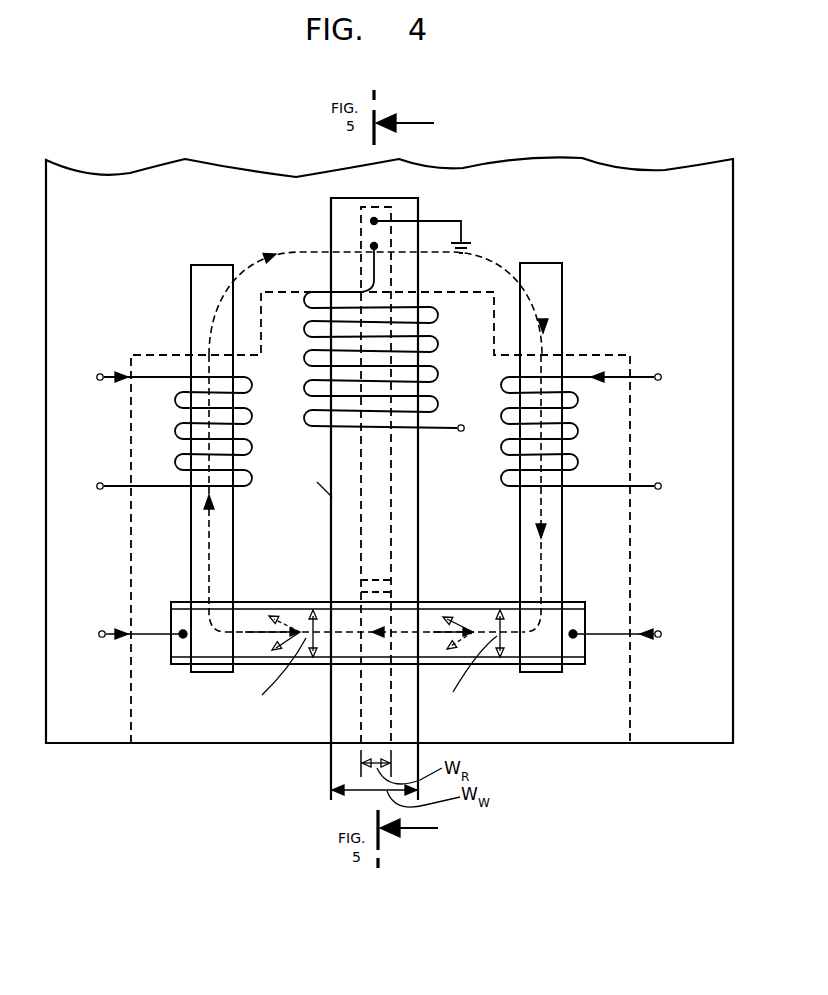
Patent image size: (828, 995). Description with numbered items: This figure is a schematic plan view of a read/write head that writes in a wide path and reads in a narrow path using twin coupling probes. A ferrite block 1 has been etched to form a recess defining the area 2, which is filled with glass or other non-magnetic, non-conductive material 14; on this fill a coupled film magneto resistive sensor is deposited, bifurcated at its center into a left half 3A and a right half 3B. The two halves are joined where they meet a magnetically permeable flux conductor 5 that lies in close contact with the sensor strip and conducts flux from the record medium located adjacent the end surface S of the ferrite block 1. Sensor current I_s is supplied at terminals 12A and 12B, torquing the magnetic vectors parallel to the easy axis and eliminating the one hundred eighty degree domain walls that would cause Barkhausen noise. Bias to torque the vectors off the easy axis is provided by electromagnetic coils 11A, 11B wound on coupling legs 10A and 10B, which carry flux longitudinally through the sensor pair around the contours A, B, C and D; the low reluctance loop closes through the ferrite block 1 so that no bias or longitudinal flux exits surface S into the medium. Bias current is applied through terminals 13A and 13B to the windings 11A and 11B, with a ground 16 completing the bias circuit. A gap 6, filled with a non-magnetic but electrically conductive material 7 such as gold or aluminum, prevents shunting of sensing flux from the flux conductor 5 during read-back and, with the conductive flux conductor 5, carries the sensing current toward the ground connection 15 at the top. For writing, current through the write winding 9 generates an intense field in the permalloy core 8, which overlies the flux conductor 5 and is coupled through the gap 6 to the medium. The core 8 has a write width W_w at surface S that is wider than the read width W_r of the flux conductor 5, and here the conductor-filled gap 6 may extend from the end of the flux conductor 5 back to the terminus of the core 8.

The ferrite block 1 is at (484, 168).
The glass-filled area 2 is at (636, 437).
The left sensor half 3A is at (282, 614).
The right sensor half 3B is at (452, 610).
The flux conductor 5 is at (372, 686).
The gap 6 is at (395, 578).
The non-magnetic conductor 7 is at (410, 468).
The core 8 is at (420, 513).
The write winding 9 is at (436, 345).
The coupling leg 10A is at (233, 522).
The coupling leg 10B is at (562, 543).
The electromagnetic coil 11A is at (175, 432).
The electromagnetic coil 11B is at (578, 430).
The sensor current terminal 12A is at (123, 628).
The sensor current terminal 12B is at (662, 630).
The bias current terminal 13A is at (93, 377).
The bias current terminal 13B is at (658, 370).
The non-magnetic fill material 14 is at (611, 710).
The ground connection 15 is at (463, 227).
The ground 16 is at (660, 482).
The end surface S is at (222, 745).